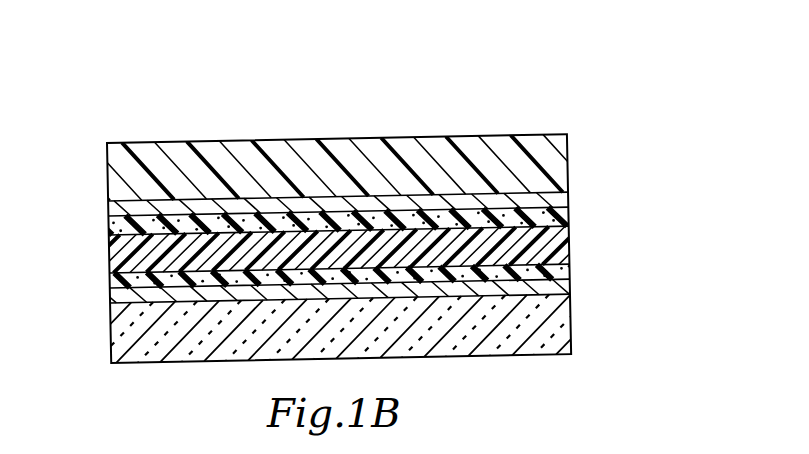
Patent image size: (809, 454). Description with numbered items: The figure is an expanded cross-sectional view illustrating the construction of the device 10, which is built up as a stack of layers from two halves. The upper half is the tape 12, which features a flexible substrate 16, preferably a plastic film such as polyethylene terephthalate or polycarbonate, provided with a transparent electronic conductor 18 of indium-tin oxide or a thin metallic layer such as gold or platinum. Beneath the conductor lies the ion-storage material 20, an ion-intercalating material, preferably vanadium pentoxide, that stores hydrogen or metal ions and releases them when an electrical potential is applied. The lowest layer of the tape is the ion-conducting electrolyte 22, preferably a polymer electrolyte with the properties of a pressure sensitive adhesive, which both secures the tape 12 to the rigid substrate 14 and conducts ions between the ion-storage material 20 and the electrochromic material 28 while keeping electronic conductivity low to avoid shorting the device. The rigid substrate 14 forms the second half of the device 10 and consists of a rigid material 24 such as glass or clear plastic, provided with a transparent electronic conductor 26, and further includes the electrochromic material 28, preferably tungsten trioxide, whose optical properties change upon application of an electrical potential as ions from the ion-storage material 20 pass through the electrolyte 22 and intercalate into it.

The device 10 is at (412, 106).
The tape 12 is at (92, 272).
The rigid substrate 14 is at (80, 365).
The flexible substrate 16 is at (565, 162).
The transparent electronic conductor 18 is at (567, 200).
The ion-storage material 20 is at (565, 216).
The ion-conducting electrolyte 22 is at (565, 246).
The rigid material 24 is at (567, 333).
The transparent electronic conductor 26 is at (566, 290).
The electrochromic material 28 is at (565, 268).